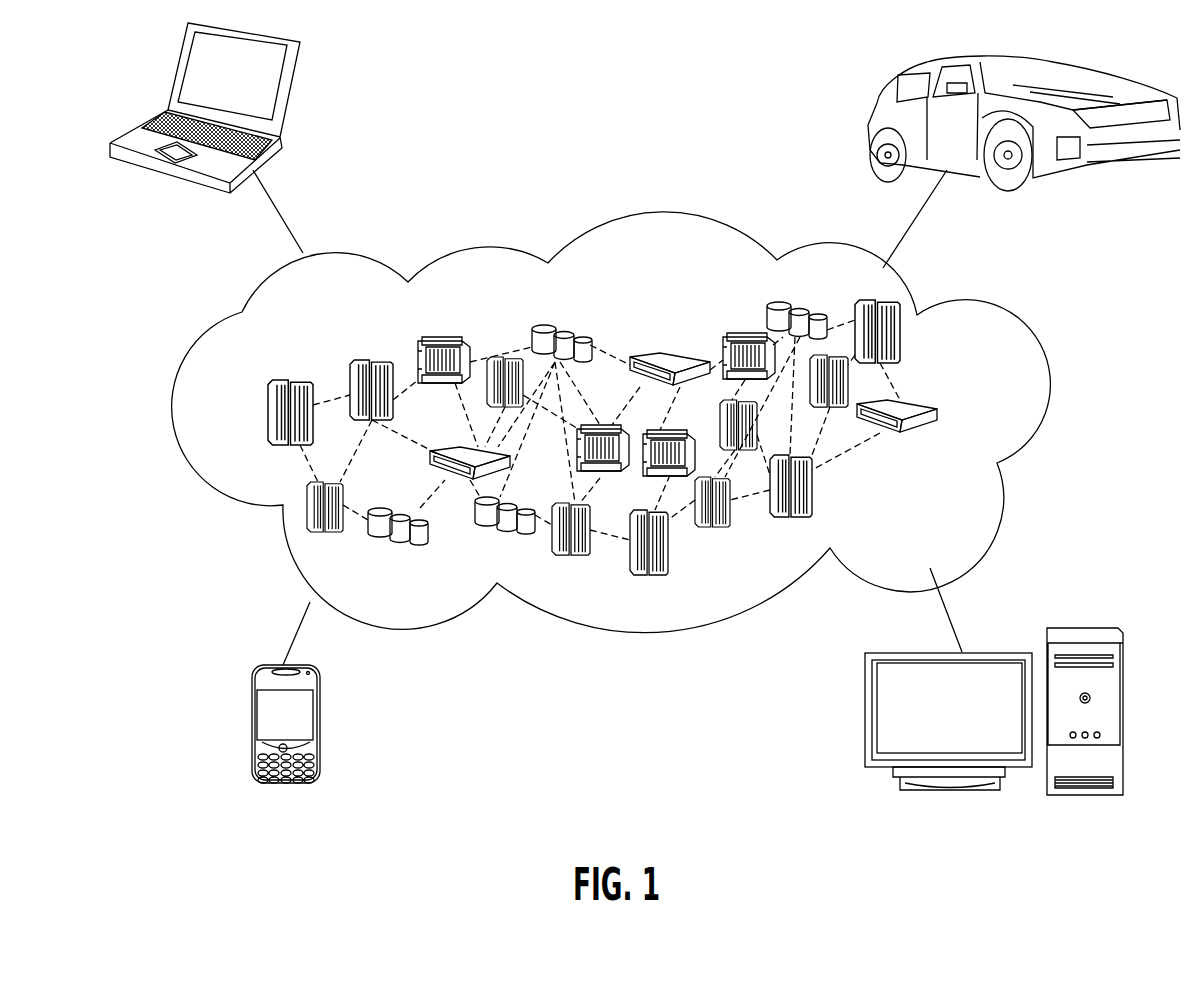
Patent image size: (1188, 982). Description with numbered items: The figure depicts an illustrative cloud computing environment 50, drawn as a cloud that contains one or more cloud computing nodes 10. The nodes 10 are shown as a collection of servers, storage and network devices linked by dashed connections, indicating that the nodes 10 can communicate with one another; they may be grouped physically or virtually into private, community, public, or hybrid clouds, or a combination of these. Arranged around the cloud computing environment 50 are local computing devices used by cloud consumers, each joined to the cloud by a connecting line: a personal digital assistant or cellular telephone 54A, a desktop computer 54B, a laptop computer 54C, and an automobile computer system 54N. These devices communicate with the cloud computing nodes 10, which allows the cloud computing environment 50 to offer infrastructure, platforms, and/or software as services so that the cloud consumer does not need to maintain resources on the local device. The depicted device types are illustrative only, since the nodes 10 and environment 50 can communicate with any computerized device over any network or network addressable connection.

The cloud computing node 10 is at (983, 417).
The cloud computing environment 50 is at (1007, 327).
The personal digital assistant or cellular telephone 54A is at (250, 732).
The desktop computer 54B is at (1090, 628).
The laptop computer 54C is at (290, 92).
The automobile computer system 54N is at (877, 100).